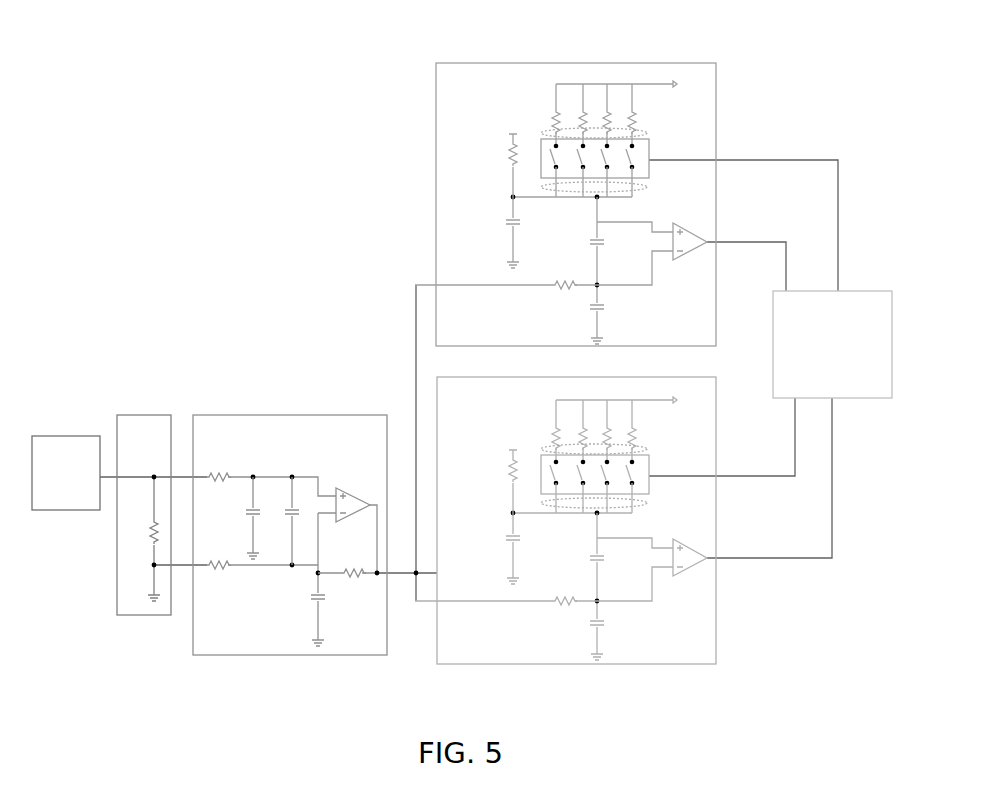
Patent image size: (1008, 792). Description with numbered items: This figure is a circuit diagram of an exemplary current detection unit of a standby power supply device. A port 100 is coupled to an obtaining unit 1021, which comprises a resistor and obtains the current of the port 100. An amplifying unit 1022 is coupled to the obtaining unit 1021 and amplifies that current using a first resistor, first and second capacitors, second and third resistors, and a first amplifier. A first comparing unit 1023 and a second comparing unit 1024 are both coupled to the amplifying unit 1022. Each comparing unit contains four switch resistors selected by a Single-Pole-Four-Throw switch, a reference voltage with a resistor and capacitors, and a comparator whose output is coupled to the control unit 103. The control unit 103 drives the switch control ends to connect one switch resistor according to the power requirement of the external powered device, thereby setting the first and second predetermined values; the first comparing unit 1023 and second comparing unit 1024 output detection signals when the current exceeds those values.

The port 100 is at (67, 436).
The obtaining unit 1021 is at (133, 415).
The amplifying unit 1022 is at (283, 415).
The first comparing unit 1023 is at (556, 664).
The second comparing unit 1024 is at (598, 63).
The control unit 103 is at (845, 291).